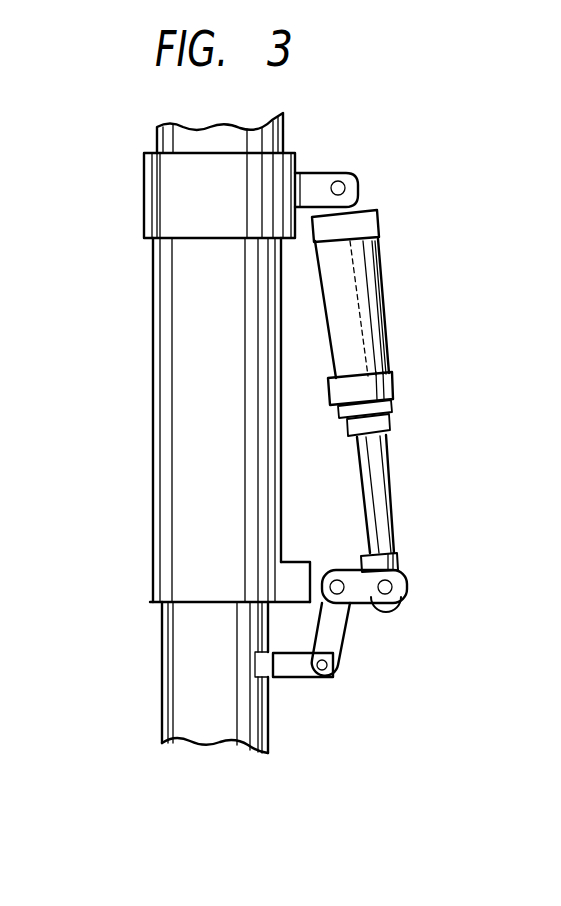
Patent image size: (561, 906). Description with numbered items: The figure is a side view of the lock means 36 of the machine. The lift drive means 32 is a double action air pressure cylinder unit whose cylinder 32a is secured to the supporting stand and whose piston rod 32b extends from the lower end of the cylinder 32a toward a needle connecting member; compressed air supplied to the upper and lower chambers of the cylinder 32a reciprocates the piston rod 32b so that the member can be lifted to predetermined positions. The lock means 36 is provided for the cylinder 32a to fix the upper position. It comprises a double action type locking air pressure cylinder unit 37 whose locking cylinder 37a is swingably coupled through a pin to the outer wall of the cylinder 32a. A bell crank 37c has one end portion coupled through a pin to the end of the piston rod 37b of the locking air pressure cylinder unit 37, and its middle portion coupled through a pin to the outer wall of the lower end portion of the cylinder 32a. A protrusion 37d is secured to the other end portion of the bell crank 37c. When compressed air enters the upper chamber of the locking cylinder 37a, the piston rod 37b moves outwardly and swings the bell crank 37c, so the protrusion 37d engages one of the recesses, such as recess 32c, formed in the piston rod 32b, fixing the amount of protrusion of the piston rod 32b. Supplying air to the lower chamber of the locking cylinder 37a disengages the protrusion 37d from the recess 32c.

The lift drive means 32 is at (157, 475).
The cylinder 32a is at (160, 347).
The piston rod 32b is at (175, 700).
The recess 32c is at (252, 666).
The lock means 36 is at (398, 233).
The locking air pressure cylinder unit 37 is at (397, 383).
The locking cylinder 37a is at (382, 304).
The piston rod 37b is at (386, 500).
The bell crank 37c is at (334, 640).
The protrusion 37d is at (290, 677).